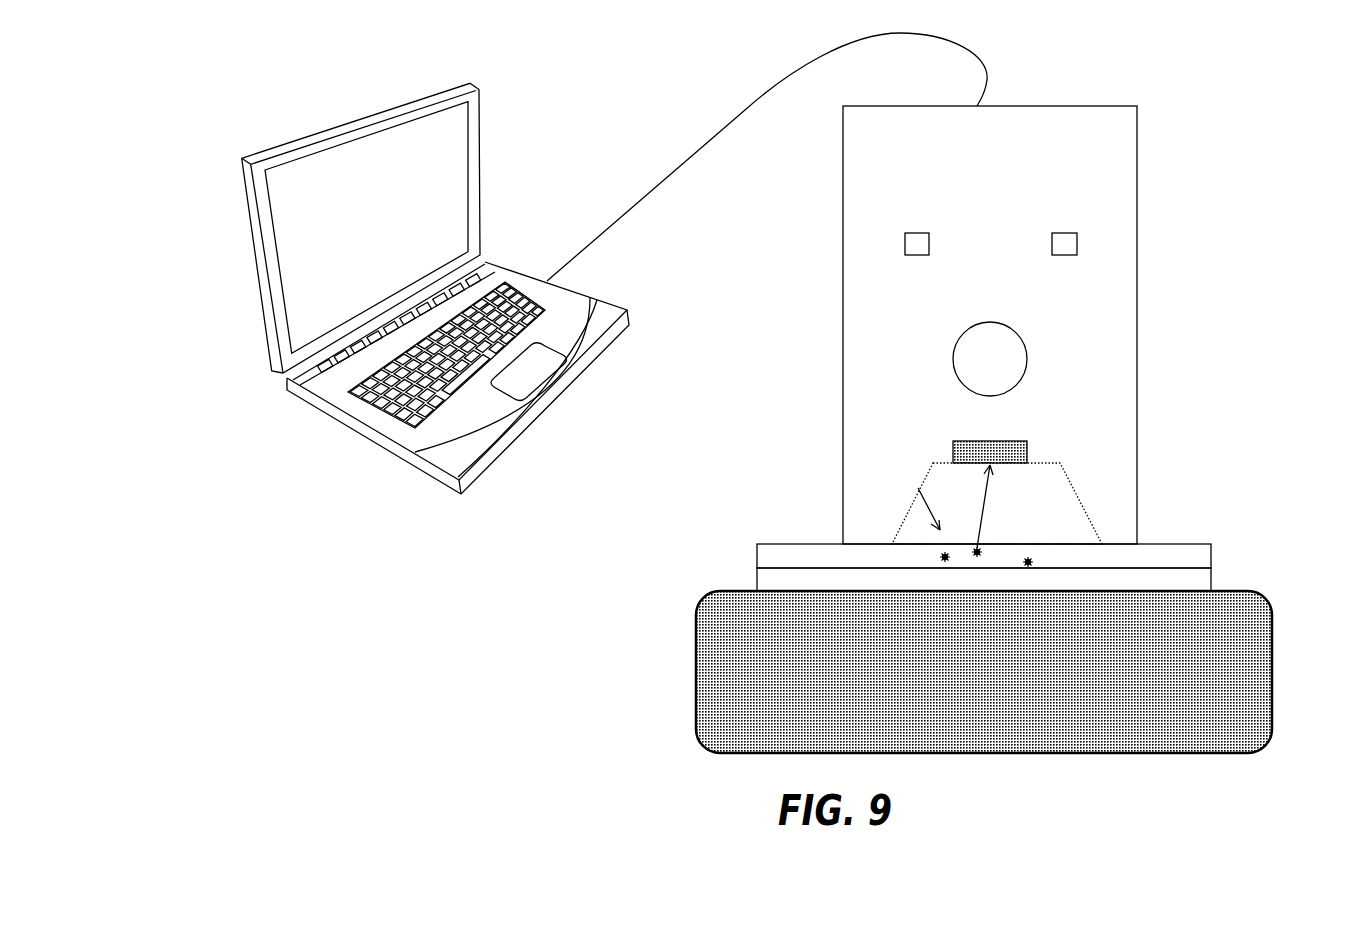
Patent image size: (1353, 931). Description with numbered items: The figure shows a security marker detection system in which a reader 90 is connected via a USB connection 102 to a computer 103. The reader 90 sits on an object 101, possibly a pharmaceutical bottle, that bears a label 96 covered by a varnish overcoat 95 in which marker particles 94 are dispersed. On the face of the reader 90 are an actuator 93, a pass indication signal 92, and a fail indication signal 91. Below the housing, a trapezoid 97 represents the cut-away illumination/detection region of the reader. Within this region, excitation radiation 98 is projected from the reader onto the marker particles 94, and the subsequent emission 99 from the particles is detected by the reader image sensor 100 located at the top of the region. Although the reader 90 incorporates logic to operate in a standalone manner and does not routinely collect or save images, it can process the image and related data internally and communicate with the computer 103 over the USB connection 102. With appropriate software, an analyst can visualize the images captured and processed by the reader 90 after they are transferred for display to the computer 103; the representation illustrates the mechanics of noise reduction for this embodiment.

The reader 90 is at (1138, 131).
The fail indication signal 91 is at (1063, 233).
The pass indication signal 92 is at (916, 233).
The actuator 93 is at (987, 322).
The marker particles 94 is at (1033, 558).
The varnish overcoat 95 is at (1188, 544).
The label 96 is at (1212, 581).
The trapezoid 97 is at (1063, 475).
The excitation radiation 98 is at (932, 513).
The emission 99 is at (983, 503).
The image sensor 100 is at (976, 441).
The object 101 is at (1273, 663).
The USB connection 102 is at (728, 125).
The computer 103 is at (457, 457).